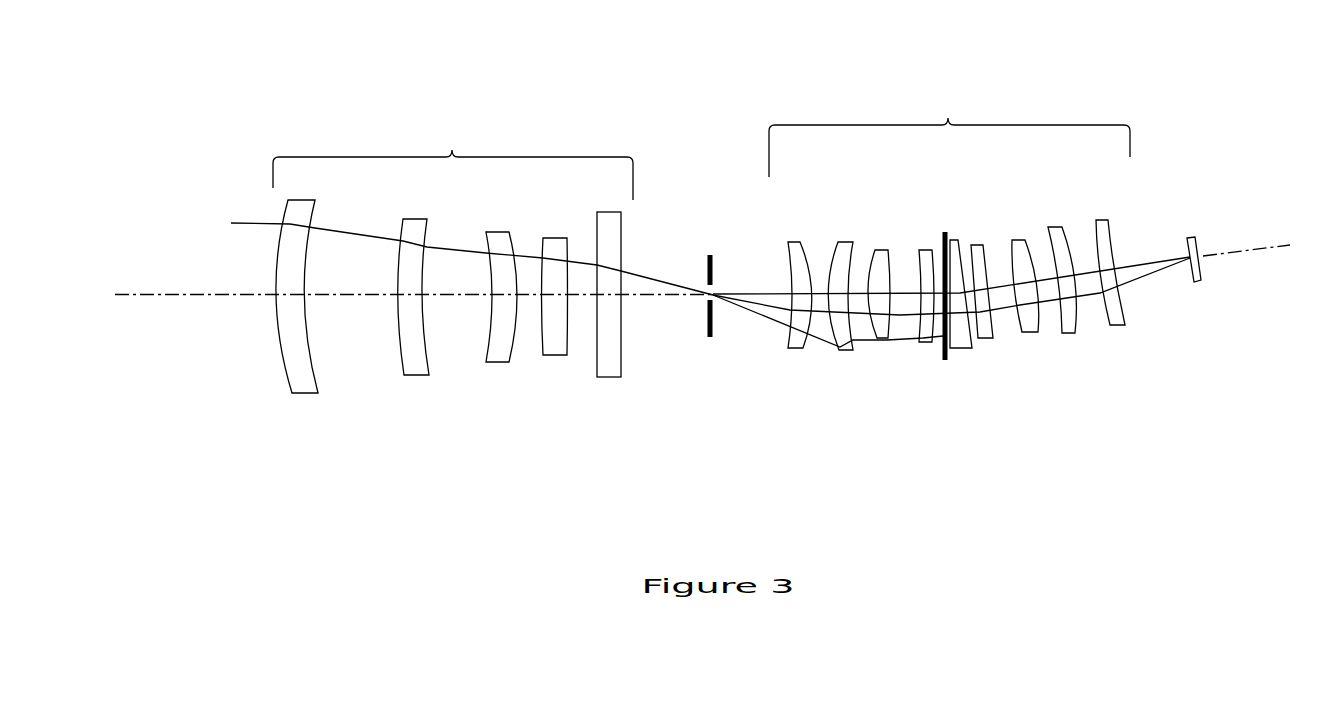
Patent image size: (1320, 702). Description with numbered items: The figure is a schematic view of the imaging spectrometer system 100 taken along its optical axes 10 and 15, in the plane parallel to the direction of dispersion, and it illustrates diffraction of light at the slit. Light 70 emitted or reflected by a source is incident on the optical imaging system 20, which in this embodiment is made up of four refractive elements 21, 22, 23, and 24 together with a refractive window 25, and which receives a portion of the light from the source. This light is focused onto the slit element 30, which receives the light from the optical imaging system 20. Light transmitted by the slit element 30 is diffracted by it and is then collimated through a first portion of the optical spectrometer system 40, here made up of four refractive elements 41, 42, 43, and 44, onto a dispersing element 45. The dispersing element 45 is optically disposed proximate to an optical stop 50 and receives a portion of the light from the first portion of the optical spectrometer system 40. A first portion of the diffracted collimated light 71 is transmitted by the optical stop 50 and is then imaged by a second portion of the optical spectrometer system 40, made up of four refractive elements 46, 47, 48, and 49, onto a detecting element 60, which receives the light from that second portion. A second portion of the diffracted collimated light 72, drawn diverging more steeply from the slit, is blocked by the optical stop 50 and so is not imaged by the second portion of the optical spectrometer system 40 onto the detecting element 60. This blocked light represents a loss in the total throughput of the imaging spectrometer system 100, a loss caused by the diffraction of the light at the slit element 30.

The imaging spectrometer system 100 is at (193, 150).
The optical axis 10 is at (152, 297).
The optical axis 15 is at (1250, 255).
The optical imaging system 20 is at (452, 150).
The refractive element 21 is at (305, 393).
The refractive element 22 is at (413, 375).
The refractive element 23 is at (495, 362).
The refractive element 24 is at (553, 355).
The refractive window 25 is at (608, 377).
The slit element 30 is at (705, 275).
The optical spectrometer system 40 is at (948, 118).
The refractive element 41 is at (791, 240).
The refractive element 42 is at (846, 242).
The refractive element 43 is at (882, 250).
The refractive element 44 is at (926, 250).
The dispersing element 45 is at (958, 350).
The refractive element 46 is at (976, 246).
The refractive element 47 is at (1015, 240).
The refractive element 48 is at (1053, 227).
The refractive element 49 is at (1108, 220).
The optical stop 50 is at (945, 360).
The detecting element 60 is at (1203, 250).
The light 70 is at (250, 228).
The first portion of the diffracted collimated light 71 is at (772, 297).
The second portion of the diffracted collimated light 72 is at (768, 318).